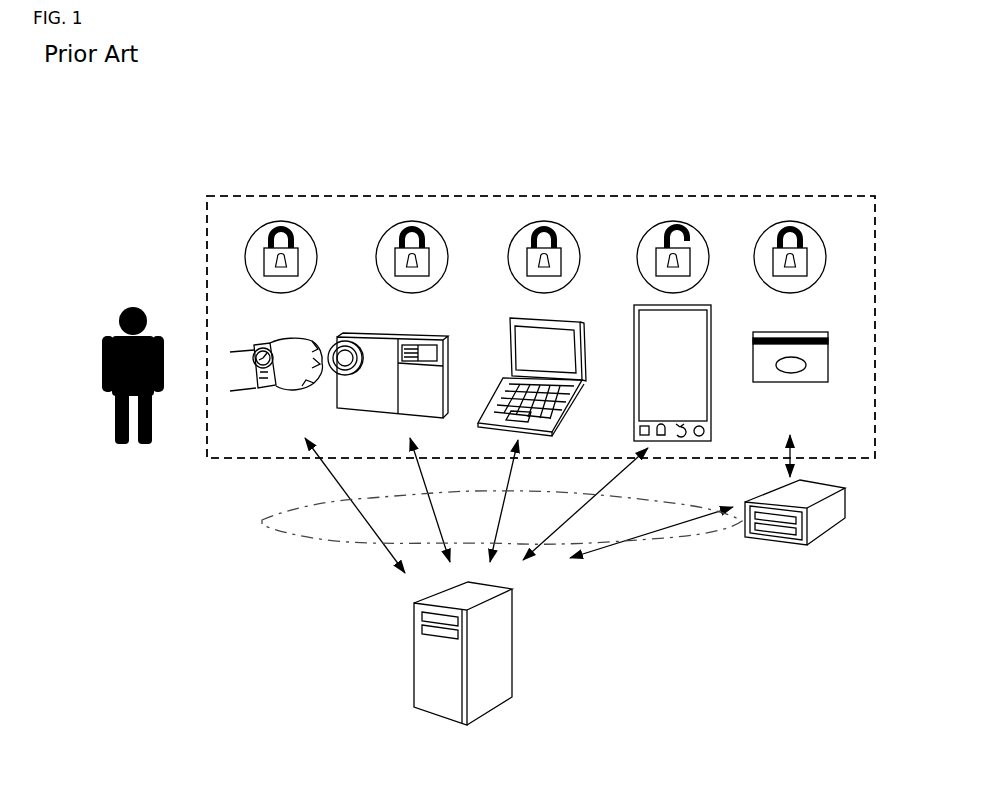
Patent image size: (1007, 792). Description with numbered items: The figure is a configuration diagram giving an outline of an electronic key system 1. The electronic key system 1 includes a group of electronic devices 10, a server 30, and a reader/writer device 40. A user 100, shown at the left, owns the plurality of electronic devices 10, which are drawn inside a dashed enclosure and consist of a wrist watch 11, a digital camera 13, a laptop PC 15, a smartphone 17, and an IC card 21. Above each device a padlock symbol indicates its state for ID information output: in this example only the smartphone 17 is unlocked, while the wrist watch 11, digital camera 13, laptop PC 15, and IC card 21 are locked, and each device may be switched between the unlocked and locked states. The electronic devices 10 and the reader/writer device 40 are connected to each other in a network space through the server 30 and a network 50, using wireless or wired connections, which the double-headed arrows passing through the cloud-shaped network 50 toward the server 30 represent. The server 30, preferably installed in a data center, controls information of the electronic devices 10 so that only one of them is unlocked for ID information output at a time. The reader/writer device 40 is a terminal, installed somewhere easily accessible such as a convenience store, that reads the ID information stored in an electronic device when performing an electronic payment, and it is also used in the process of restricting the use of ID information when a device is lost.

The electronic key system 1 is at (276, 184).
The electronic devices 10 is at (739, 195).
The wrist watch 11 is at (288, 343).
The digital camera 13 is at (448, 354).
The laptop PC 15 is at (582, 354).
The smartphone 17 is at (711, 353).
The IC card 21 is at (828, 354).
The server 30 is at (512, 668).
The reader/writer device 40 is at (845, 504).
The network 50 is at (285, 519).
The user 100 is at (187, 335).